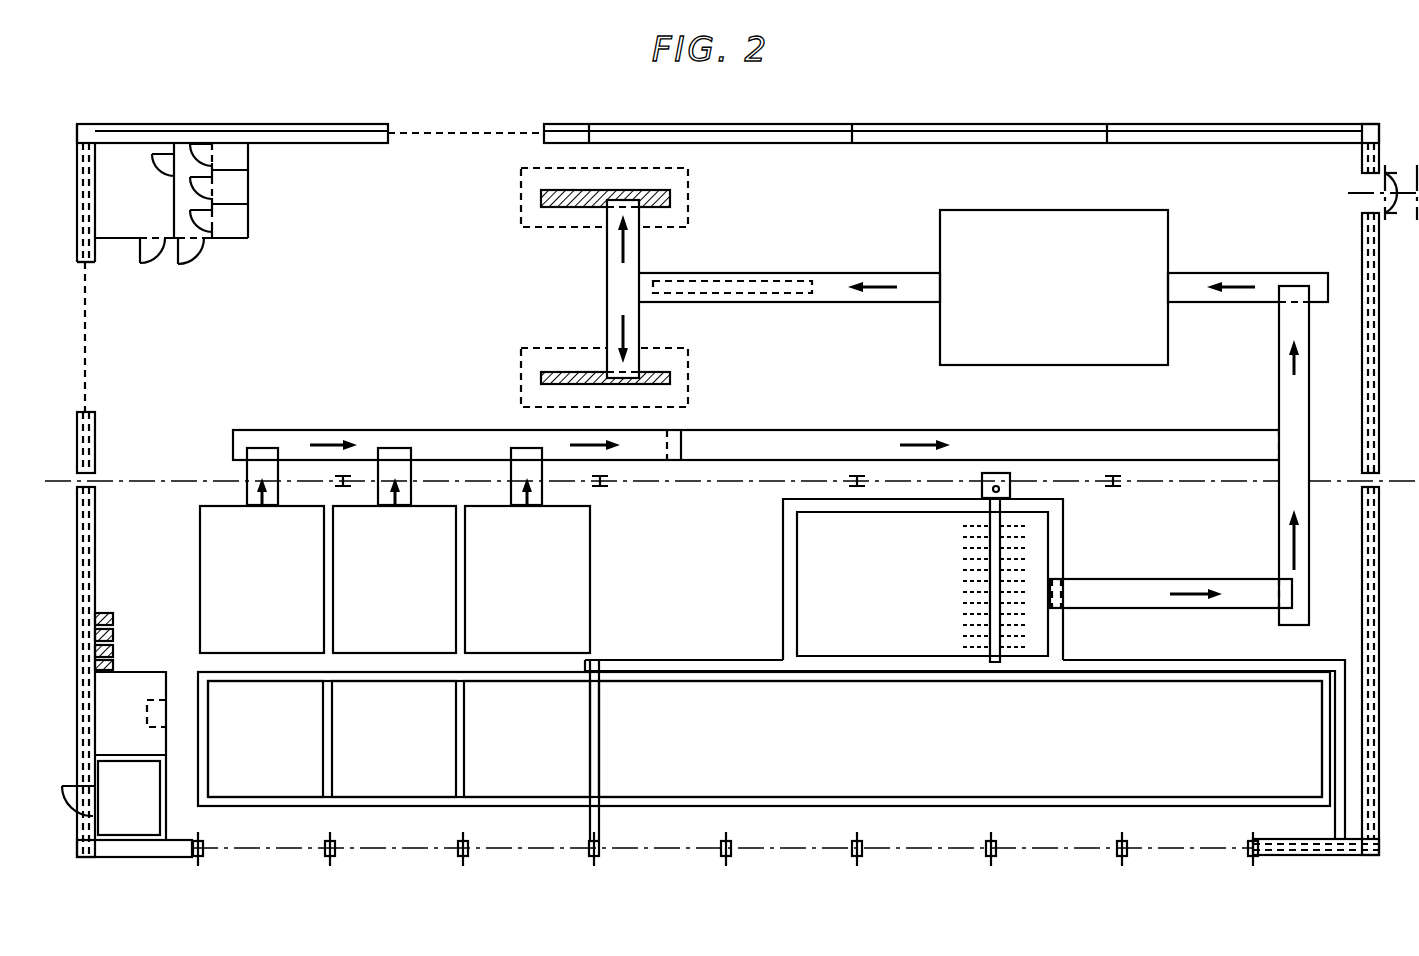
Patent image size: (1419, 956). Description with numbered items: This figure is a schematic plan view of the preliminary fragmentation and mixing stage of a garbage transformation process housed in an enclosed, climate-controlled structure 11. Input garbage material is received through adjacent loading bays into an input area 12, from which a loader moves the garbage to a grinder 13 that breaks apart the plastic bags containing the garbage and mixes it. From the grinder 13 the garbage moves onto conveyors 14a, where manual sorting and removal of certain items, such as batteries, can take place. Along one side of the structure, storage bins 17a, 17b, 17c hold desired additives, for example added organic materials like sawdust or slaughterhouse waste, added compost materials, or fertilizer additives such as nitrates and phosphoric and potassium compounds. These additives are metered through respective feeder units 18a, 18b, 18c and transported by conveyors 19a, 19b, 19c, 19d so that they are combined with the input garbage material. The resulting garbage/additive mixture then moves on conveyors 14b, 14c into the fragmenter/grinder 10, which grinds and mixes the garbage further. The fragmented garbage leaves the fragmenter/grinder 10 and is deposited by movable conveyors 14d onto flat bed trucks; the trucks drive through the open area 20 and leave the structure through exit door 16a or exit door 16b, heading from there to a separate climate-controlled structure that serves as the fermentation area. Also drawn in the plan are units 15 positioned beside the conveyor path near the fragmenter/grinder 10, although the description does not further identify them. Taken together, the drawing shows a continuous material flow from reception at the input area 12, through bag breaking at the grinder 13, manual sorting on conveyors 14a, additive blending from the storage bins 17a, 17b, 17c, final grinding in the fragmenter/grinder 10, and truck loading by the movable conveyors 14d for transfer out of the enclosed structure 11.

The fragmenter/grinder 10 is at (1046, 292).
The enclosed structure 11 is at (1018, 103).
The input area 12 is at (943, 740).
The grinder 13 is at (869, 595).
The conveyors 14a is at (1175, 579).
The conveyors 14b is at (1278, 524).
The conveyors 14c is at (640, 255).
The movable conveyors 14d is at (866, 273).
The heat exchanger 15 is at (690, 200).
The exit door 16a is at (544, 126).
The exit door 16b is at (87, 263).
The storage bin 17a is at (243, 740).
The storage bin 17b is at (376, 740).
The storage bin 17c is at (508, 740).
The feeder unit 18a is at (243, 570).
The room 18b is at (376, 570).
The feeder unit 18c is at (508, 570).
The conveyor 19a is at (262, 448).
The conveyor 19b is at (395, 448).
The conveyor 19c is at (527, 448).
The conveyor 19d is at (835, 430).
The area 20 is at (412, 283).